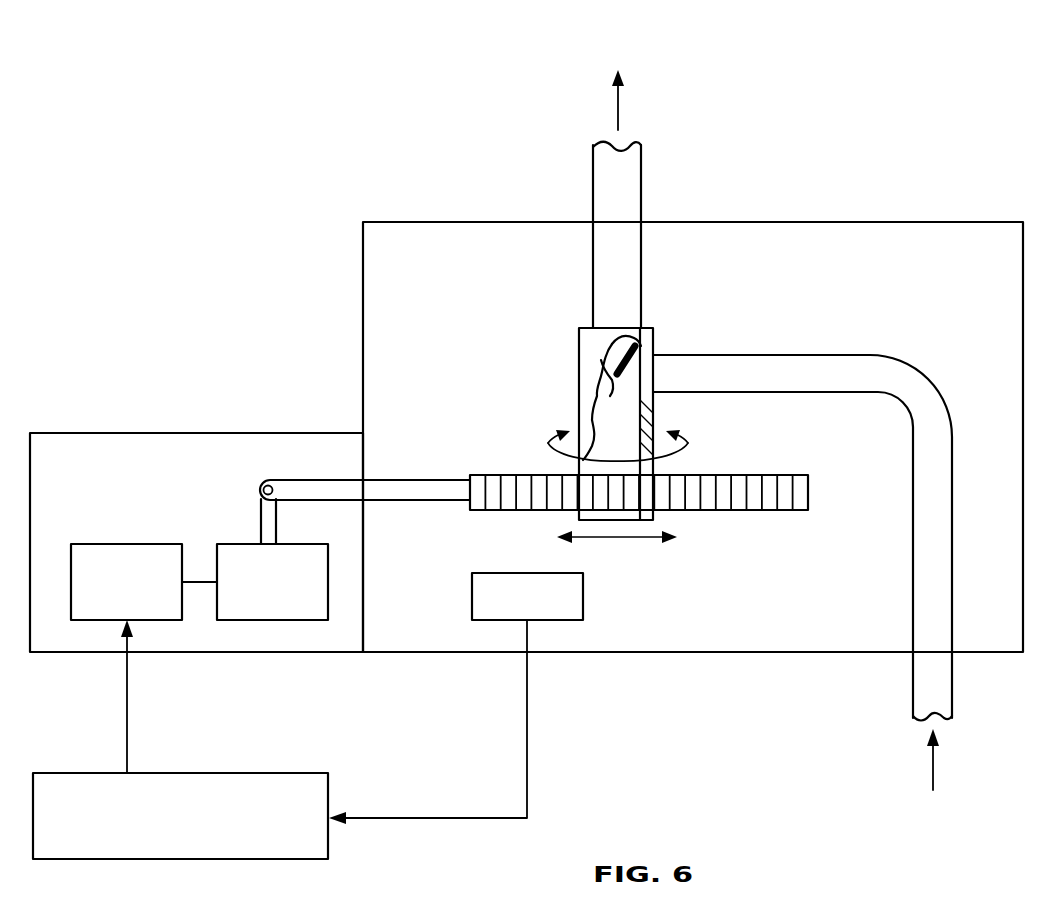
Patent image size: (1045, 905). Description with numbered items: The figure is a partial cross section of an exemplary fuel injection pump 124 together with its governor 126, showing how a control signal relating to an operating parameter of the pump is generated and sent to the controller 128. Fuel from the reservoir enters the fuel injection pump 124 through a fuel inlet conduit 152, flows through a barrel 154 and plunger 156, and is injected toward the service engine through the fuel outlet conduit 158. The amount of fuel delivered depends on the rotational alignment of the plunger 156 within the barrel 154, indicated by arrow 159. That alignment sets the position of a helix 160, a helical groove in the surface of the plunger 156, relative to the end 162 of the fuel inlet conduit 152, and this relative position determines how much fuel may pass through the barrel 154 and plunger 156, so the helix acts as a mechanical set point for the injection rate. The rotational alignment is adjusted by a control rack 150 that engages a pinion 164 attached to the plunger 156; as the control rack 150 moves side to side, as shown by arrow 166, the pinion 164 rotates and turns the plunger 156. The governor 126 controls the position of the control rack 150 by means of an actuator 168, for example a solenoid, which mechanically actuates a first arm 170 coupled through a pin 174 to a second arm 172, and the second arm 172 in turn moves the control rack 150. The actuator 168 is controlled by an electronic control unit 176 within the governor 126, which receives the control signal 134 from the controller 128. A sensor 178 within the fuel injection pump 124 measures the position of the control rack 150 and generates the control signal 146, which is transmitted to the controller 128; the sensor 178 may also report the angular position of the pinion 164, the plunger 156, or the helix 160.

The fuel injection pump 124 is at (800, 221).
The governor 126 is at (142, 433).
The controller 128 is at (253, 773).
The control signal 134 is at (128, 712).
The control signal 146 is at (527, 740).
The control rack 150 is at (796, 475).
The fuel inlet conduit 152 is at (866, 355).
The barrel 154 is at (648, 426).
The plunger 156 is at (606, 420).
The fuel outlet conduit 158 is at (642, 260).
The arrow 159 is at (680, 438).
The helix 160 is at (603, 352).
The end of the fuel inlet conduit 162 is at (645, 366).
The pinion 164 is at (650, 512).
The arrow 166 is at (600, 541).
The actuator 168 is at (300, 544).
The first arm 170 is at (260, 530).
The second arm 172 is at (300, 480).
The pin 174 is at (262, 489).
The electronic control unit 176 is at (118, 544).
The sensor 178 is at (584, 600).